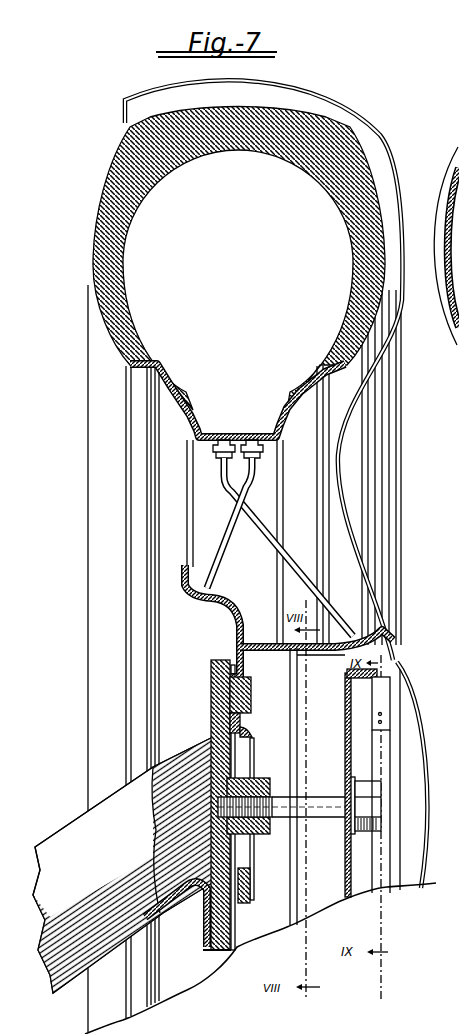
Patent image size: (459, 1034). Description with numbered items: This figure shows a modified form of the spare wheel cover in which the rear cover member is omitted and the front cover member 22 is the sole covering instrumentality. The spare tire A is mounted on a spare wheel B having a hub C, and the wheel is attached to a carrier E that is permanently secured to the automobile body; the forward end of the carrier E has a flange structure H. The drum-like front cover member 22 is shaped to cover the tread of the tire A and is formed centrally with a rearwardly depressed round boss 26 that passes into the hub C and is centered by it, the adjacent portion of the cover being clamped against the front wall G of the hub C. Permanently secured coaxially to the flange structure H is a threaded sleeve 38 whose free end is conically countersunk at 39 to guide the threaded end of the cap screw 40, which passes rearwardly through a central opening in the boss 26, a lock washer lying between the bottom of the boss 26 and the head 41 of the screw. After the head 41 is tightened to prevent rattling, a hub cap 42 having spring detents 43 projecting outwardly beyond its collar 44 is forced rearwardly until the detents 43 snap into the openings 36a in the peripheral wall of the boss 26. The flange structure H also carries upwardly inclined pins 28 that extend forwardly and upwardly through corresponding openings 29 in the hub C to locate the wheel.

The spare tire A is at (92, 253).
The spare wheel B is at (240, 431).
The hub C is at (180, 584).
The carrier E is at (65, 828).
The front wall of the hub G is at (360, 652).
The flange structure H is at (222, 656).
The front cover member 22 is at (378, 137).
The boss 26 is at (342, 721).
The upwardly inclined pins 28 is at (253, 698).
The openings in the hub 29 is at (243, 721).
The openings in the peripheral wall of the boss 36a is at (348, 677).
The threaded sleeve 38 is at (256, 779).
The conical countersink 39 is at (263, 800).
The cap screw 40 is at (320, 812).
The head of the screw 41 is at (370, 830).
The hub cap 42 is at (421, 708).
The spring detents 43 is at (379, 706).
The collar of the cap 44 is at (372, 772).